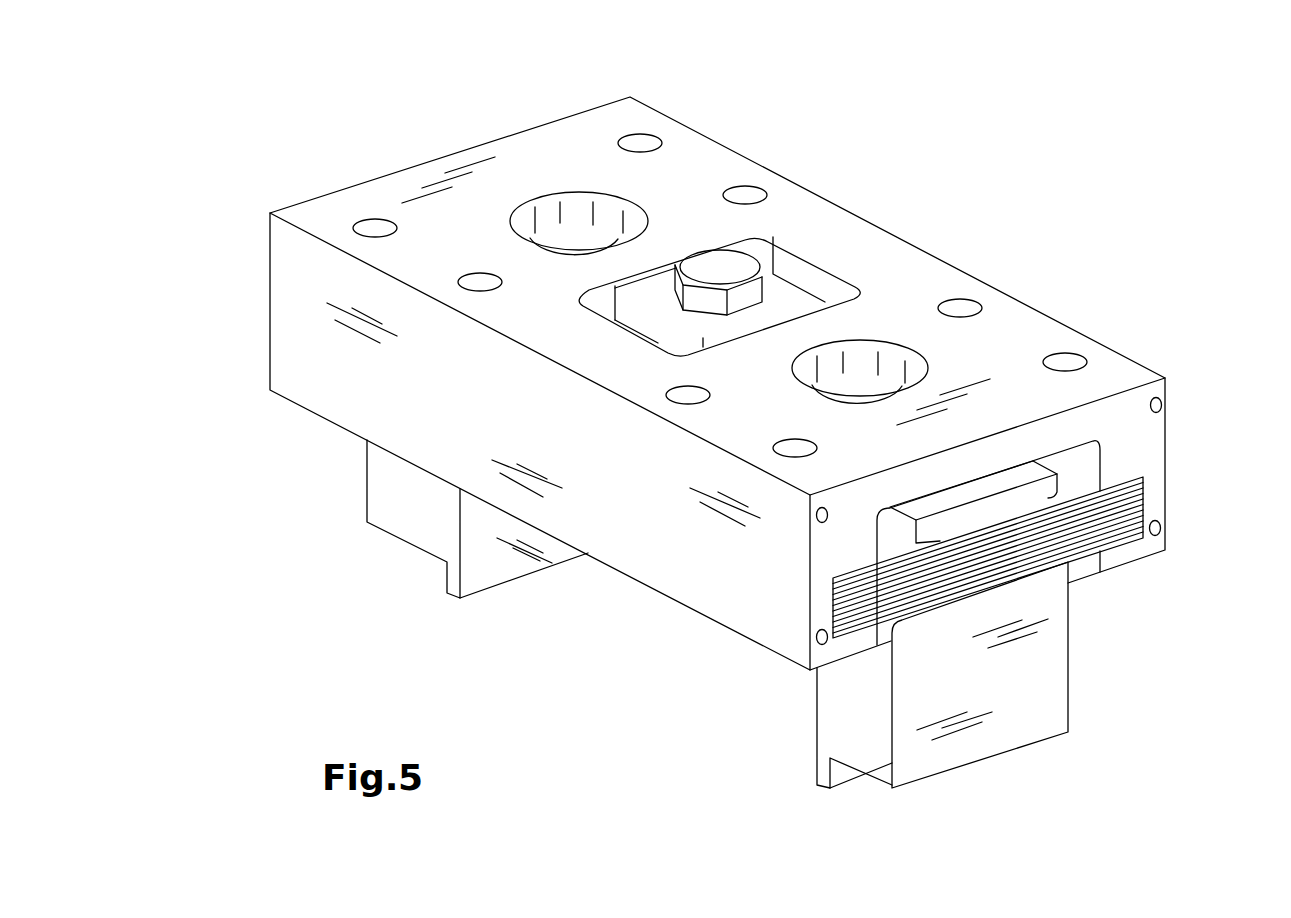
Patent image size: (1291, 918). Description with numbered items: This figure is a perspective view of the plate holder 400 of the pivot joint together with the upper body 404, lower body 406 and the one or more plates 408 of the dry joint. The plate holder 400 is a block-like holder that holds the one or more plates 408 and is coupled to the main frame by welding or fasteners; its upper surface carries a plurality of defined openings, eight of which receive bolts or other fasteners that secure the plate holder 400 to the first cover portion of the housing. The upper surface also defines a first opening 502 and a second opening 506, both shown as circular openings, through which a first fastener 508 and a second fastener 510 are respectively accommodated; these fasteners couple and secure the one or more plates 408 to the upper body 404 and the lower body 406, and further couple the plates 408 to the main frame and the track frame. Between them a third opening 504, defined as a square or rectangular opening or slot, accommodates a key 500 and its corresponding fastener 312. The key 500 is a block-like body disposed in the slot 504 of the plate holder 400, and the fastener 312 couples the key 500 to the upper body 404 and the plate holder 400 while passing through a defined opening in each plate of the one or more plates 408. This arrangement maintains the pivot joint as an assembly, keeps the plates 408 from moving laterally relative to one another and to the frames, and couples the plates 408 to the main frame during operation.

The fastener 312 is at (708, 260).
The plate holder 400 is at (292, 314).
The upper body 404 is at (1007, 507).
The lower body 406 is at (1042, 677).
The plates 408 is at (1137, 507).
The key 500 is at (653, 295).
The first opening 502 is at (547, 219).
The third opening 504 is at (796, 270).
The second opening 506 is at (866, 362).
The first fastener 508 is at (578, 237).
The second fastener 510 is at (880, 388).